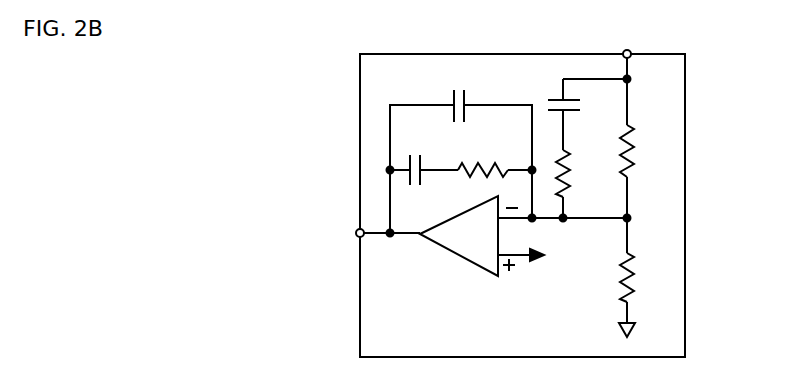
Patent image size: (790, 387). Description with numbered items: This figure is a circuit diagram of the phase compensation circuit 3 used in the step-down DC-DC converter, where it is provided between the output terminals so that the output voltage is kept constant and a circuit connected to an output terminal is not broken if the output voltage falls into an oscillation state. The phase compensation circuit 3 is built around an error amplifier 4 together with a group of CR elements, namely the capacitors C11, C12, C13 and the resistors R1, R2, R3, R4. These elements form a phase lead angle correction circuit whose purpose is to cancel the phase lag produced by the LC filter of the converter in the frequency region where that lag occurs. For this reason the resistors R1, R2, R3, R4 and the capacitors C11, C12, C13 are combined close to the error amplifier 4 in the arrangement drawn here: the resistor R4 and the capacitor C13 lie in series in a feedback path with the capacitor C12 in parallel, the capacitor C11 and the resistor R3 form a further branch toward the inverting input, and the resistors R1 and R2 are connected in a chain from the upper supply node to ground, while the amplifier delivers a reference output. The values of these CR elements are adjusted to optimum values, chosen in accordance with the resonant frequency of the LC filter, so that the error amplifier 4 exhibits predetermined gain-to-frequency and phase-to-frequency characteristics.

The phase compensation circuit 3 is at (360, 83).
The error amplifier 4 is at (457, 254).
The resistor R1 is at (641, 151).
The resistor R2 is at (641, 277).
The resistor R3 is at (578, 173).
The resistor R4 is at (483, 158).
The capacitor C11 is at (581, 105).
The capacitor C12 is at (457, 94).
The capacitor C13 is at (416, 158).